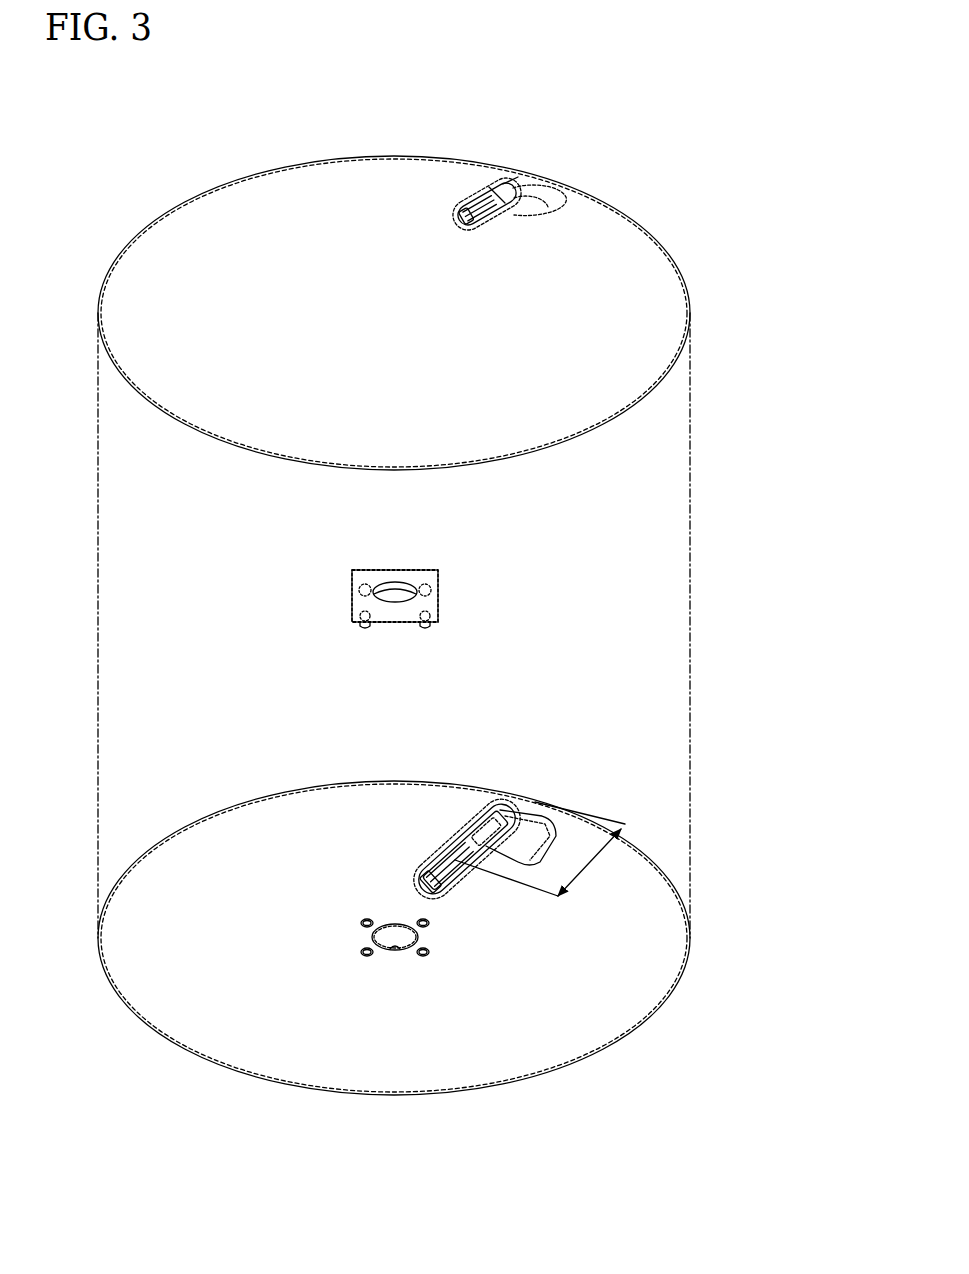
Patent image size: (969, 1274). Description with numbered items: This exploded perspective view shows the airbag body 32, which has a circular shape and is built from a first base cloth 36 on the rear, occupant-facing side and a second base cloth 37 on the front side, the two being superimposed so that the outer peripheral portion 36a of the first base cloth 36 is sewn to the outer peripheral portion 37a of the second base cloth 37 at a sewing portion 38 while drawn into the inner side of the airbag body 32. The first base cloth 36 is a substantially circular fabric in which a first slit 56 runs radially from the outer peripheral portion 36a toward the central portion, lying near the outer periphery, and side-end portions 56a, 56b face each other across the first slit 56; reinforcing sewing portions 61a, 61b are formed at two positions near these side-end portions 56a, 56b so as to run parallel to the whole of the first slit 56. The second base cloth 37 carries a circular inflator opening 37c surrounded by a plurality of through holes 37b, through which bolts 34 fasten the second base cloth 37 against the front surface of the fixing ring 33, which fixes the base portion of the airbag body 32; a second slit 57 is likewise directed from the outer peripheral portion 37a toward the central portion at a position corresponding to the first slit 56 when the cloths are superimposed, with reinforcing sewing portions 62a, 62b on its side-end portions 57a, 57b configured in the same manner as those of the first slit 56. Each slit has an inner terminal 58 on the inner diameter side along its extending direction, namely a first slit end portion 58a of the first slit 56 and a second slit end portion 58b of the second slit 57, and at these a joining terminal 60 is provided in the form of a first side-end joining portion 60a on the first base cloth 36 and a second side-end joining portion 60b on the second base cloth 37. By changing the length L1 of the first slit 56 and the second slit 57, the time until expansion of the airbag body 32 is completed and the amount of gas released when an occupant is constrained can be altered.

The airbag body 32 is at (129, 146).
The fixing ring 33 is at (413, 570).
The bolts 34 is at (362, 627).
The first base cloth 36 is at (657, 228).
The outer peripheral portion 36a is at (691, 296).
The second base cloth 37 is at (629, 815).
The outer peripheral portion 37a is at (650, 1023).
The through holes 37b is at (367, 920).
The inflator opening 37c is at (400, 948).
The sewing portion 38 is at (673, 258).
The first slit 56 is at (487, 198).
The side-end portion 56a is at (513, 185).
The side-end portion 56b is at (558, 206).
The second slit 57 is at (512, 789).
The side-end portion 57a is at (465, 850).
The side-end portion 57b is at (516, 809).
The terminal 58 is at (443, 861).
The first slit end portion 58a is at (480, 208).
The second slit end portion 58b is at (450, 865).
The terminal 60 is at (433, 870).
The first side-end joining portion 60a is at (466, 215).
The second side-end joining portion 60b is at (430, 881).
The reinforcing sewing portion 61a is at (497, 194).
The reinforcing sewing portion 61b is at (521, 203).
The reinforcing sewing portion 62a is at (503, 808).
The reinforcing sewing portion 62b is at (545, 830).
The length L1 is at (540, 849).